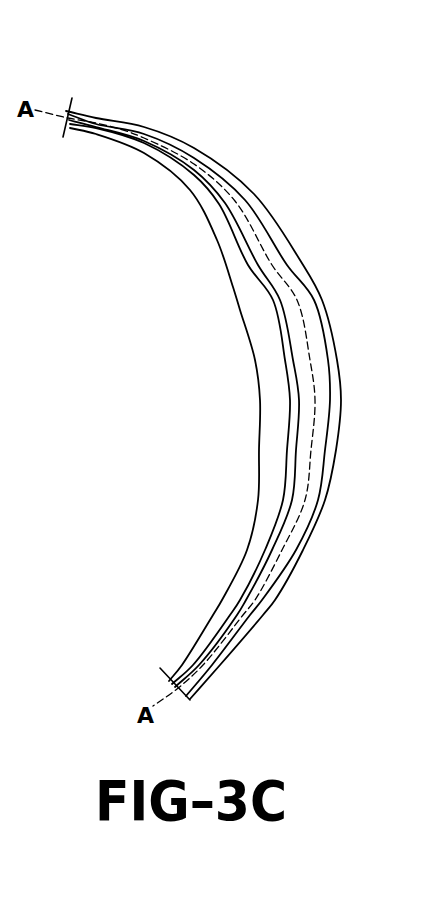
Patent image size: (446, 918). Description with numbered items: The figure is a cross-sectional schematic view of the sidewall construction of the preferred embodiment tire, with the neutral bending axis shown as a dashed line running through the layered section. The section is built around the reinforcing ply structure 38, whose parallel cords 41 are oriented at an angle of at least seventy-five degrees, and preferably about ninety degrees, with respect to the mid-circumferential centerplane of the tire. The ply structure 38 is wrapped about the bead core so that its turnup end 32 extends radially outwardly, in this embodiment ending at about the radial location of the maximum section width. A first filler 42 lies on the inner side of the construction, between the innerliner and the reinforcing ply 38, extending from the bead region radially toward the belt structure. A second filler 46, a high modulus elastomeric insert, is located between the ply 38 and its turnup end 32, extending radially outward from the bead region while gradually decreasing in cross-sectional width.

The turnup end 32 is at (322, 303).
The second filler 46 is at (320, 357).
The reinforcing ply structure 38 is at (290, 448).
The cords 41 is at (260, 275).
The first filler 42 is at (270, 355).